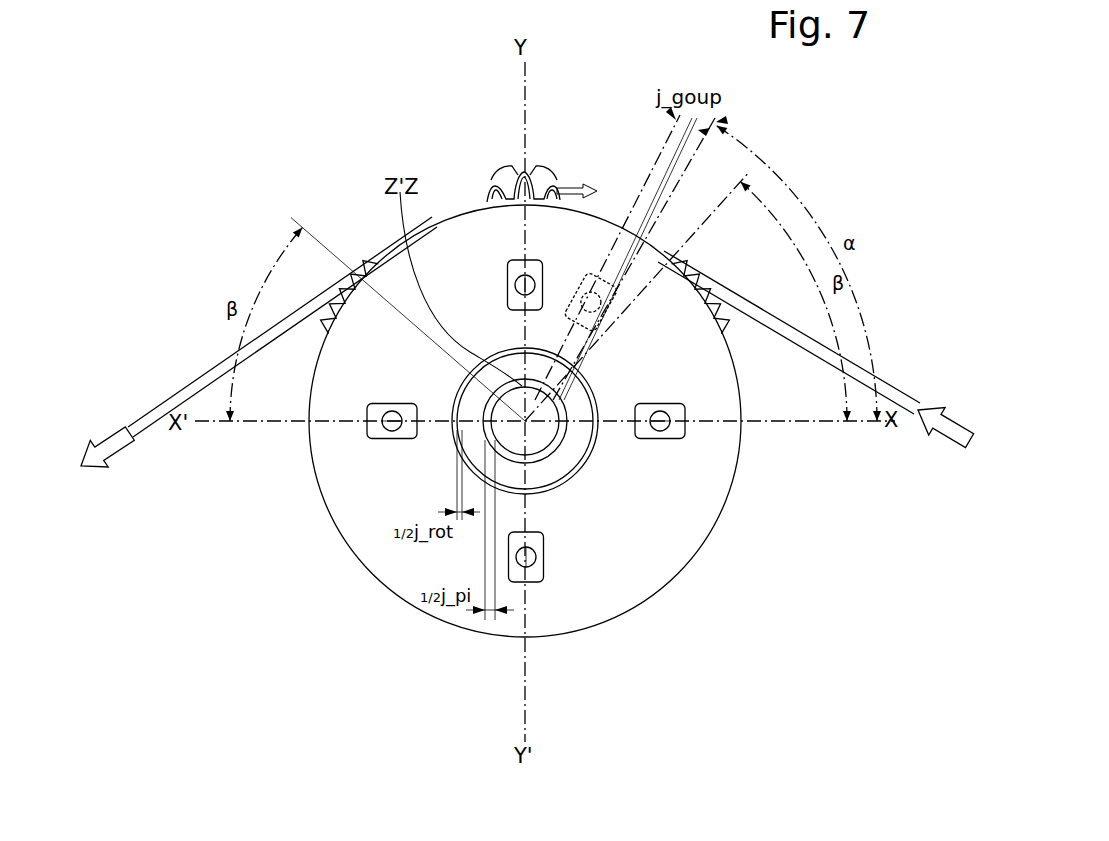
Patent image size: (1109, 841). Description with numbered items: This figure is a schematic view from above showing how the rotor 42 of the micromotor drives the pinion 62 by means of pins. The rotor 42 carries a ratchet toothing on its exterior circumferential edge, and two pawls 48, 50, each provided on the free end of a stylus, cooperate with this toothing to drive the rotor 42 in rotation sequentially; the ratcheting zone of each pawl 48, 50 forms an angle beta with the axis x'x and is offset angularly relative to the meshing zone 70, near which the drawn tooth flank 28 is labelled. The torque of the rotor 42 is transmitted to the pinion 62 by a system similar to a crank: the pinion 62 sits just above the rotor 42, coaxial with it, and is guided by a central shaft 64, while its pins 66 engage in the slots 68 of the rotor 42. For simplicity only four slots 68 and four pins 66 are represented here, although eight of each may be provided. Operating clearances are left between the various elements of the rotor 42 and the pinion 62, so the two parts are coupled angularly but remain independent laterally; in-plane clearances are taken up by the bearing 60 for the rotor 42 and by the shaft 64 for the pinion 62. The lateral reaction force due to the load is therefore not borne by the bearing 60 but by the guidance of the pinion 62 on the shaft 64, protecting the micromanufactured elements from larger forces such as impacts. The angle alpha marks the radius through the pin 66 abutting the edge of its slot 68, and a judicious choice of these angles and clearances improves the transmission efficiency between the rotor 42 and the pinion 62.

The rotor 42 is at (458, 628).
The bearing 60 is at (567, 460).
The central shaft 64 is at (573, 447).
The pins 66 is at (604, 298).
The slots 68 is at (588, 272).
The pawl 48 is at (688, 264).
The pawl 50 is at (378, 262).
The meshing zone 70 is at (510, 143).
The tooth flank 28 is at (512, 163).
The pinion 62 is at (538, 176).